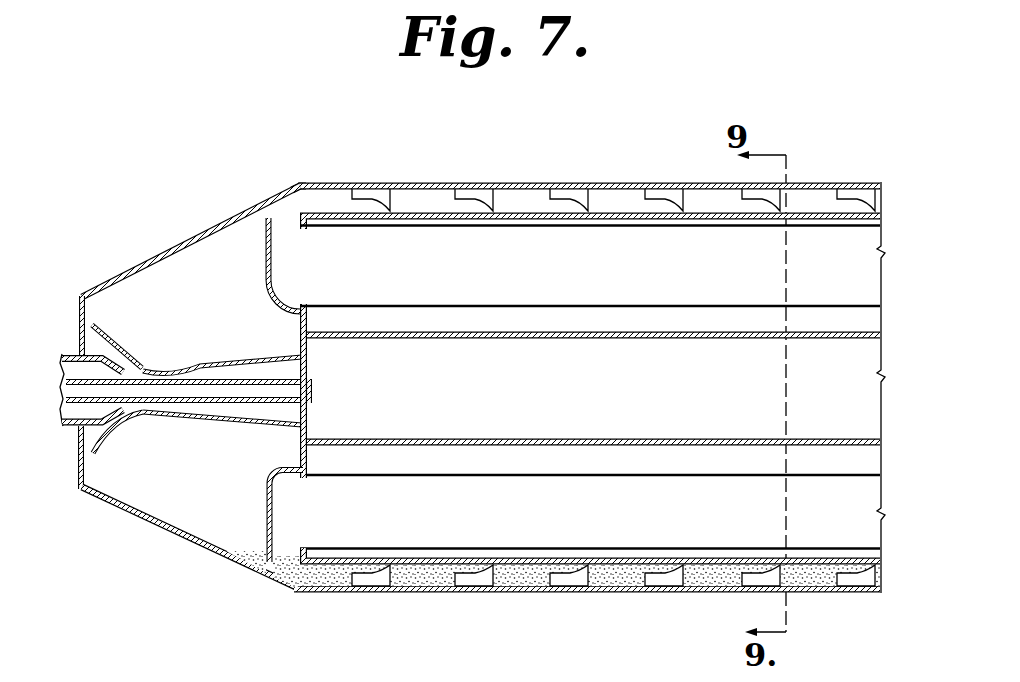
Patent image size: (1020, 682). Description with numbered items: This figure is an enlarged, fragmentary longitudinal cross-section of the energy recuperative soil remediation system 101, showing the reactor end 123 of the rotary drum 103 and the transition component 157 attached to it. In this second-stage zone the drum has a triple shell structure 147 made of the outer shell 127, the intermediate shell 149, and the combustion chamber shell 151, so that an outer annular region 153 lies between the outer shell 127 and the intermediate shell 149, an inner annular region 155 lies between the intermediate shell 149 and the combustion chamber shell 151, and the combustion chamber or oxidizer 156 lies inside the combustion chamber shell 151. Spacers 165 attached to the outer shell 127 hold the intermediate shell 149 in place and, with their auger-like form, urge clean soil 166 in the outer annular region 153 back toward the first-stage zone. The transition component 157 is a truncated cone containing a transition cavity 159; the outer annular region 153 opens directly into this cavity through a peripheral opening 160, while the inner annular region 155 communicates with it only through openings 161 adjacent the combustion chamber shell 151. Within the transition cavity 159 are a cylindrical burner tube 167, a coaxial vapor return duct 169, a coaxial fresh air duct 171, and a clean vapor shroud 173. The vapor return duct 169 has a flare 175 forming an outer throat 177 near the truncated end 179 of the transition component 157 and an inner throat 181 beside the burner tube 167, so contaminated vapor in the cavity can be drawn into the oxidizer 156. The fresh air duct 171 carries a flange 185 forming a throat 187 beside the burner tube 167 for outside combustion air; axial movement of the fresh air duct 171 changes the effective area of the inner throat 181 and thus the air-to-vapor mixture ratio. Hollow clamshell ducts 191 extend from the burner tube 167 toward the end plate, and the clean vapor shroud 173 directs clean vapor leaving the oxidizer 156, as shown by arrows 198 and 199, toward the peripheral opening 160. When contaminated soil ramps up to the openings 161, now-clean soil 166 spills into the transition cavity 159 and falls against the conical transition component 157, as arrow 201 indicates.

The energy recuperative soil remediation system 101 is at (227, 193).
The rotary drum 103 is at (543, 182).
The reactor end 123 is at (327, 181).
The outer shell 127 is at (451, 186).
The triple shell structure 147 is at (765, 117).
The intermediate shell 149 is at (637, 204).
The combustion chamber shell 151 is at (489, 438).
The outer annular region 153 is at (407, 192).
The inner annular region 155 is at (528, 553).
The combustion chamber 156 is at (626, 396).
The transition component 157 is at (183, 548).
The transition cavity 159 is at (197, 262).
The peripheral opening 160 is at (308, 184).
The openings 161 is at (305, 313).
The spacers 165 is at (472, 196).
The clean soil 166 is at (304, 593).
The burner tube 167 is at (308, 366).
The vapor return duct 169 is at (193, 425).
The fresh air duct 171 is at (66, 428).
The clean vapor shroud 173 is at (263, 273).
The flare 175 is at (112, 345).
The outer throat 177 is at (104, 307).
The truncated end 179 is at (80, 303).
The inner throat 181 is at (145, 370).
The flange 185 is at (115, 430).
The throat 187 is at (72, 372).
The clamshell ducts 191 is at (667, 284).
The arrow 198 is at (285, 232).
The arrow 199 is at (287, 545).
The arrow 201 is at (255, 527).